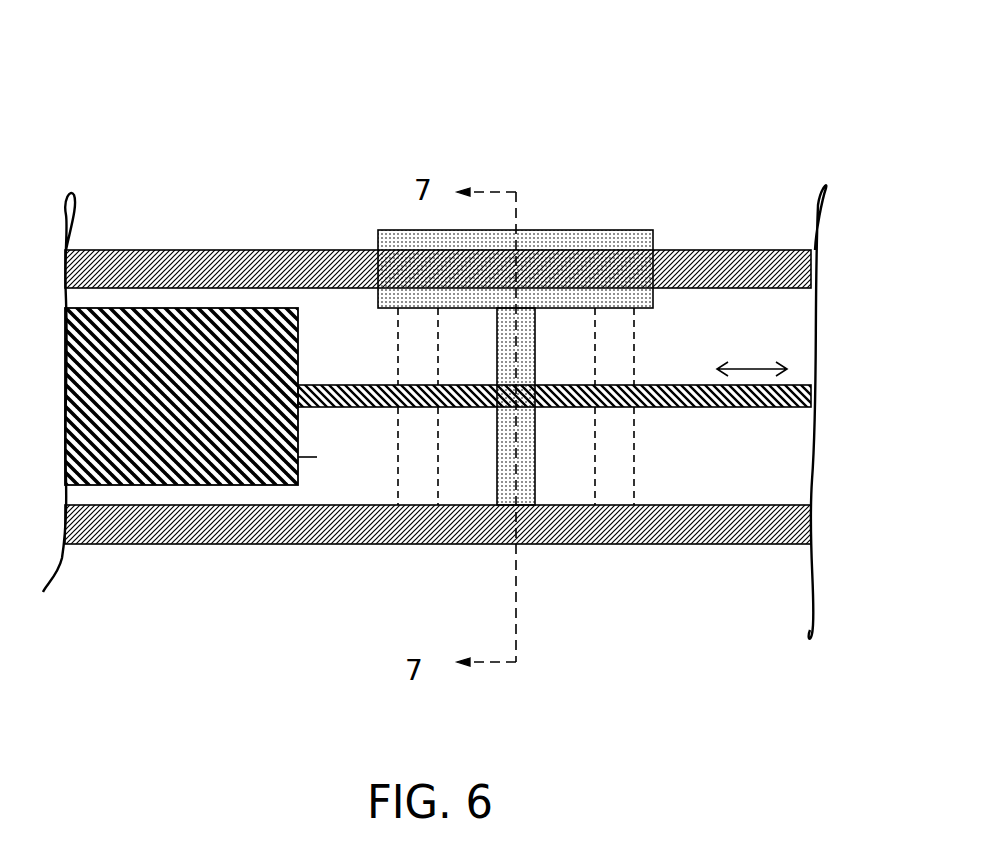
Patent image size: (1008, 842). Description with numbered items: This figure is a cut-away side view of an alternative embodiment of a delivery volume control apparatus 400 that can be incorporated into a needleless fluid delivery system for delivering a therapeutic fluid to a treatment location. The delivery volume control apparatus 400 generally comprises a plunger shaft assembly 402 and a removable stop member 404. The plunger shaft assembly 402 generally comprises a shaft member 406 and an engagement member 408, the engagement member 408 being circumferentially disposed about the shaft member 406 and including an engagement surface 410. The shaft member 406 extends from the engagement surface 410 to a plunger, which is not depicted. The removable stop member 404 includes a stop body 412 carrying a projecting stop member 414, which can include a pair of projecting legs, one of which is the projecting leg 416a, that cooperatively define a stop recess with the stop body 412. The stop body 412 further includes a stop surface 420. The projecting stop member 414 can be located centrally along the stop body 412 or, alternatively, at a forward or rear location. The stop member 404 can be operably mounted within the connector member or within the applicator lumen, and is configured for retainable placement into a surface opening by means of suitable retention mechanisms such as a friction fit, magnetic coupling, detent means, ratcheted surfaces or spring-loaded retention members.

The delivery volume control apparatus 400 is at (735, 130).
The plunger shaft assembly 402 is at (357, 407).
The removable stop member 404 is at (558, 230).
The shaft member 406 is at (708, 408).
The engagement member 408 is at (155, 307).
The engagement surface 410 is at (317, 460).
The stop body 412 is at (618, 245).
The projecting stop member 414 is at (533, 332).
The projecting leg 416a is at (527, 478).
The stop surface 420 is at (497, 468).